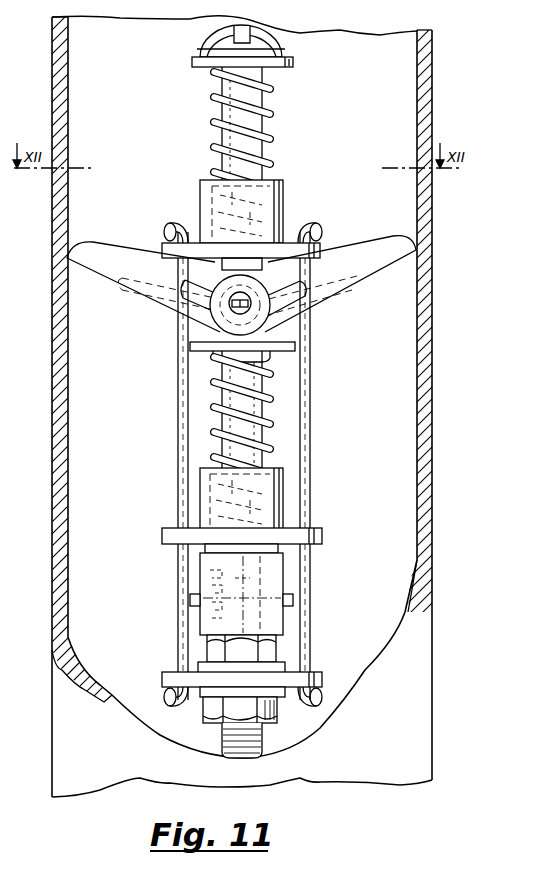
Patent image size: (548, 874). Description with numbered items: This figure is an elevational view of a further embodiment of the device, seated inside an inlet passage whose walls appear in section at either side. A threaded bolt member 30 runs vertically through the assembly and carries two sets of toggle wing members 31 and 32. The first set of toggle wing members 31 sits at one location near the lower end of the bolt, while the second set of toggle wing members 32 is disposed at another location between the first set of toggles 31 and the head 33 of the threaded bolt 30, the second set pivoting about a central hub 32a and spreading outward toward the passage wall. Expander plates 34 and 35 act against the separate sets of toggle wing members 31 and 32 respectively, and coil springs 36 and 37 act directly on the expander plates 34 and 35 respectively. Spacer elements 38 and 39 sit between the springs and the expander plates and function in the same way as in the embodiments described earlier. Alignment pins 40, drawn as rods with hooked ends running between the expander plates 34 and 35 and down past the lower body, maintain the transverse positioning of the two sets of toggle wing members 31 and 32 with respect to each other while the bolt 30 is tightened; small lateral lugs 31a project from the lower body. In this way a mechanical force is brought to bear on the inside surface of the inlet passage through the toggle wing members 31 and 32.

The bolt member 30 is at (250, 110).
The first set of toggle wing members 31 is at (285, 573).
The lateral lug of lower body 31a is at (293, 598).
The second set of toggle wing members 32 is at (112, 279).
The pivot hub of arms 32a is at (262, 322).
The head 33 is at (263, 33).
The expander plate 34 is at (322, 538).
The expander plate 35 is at (322, 250).
The coil spring 36 is at (268, 412).
The coil spring 37 is at (265, 148).
The spacer element 38 is at (283, 485).
The spacer element 39 is at (283, 190).
The alignment pins 40 is at (170, 226).